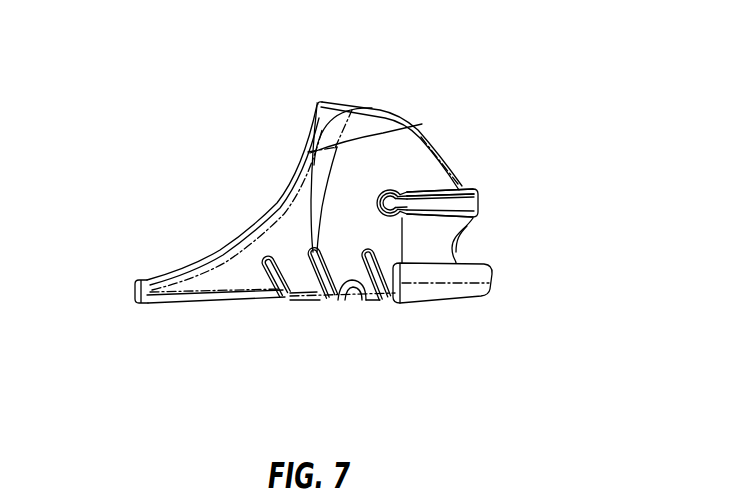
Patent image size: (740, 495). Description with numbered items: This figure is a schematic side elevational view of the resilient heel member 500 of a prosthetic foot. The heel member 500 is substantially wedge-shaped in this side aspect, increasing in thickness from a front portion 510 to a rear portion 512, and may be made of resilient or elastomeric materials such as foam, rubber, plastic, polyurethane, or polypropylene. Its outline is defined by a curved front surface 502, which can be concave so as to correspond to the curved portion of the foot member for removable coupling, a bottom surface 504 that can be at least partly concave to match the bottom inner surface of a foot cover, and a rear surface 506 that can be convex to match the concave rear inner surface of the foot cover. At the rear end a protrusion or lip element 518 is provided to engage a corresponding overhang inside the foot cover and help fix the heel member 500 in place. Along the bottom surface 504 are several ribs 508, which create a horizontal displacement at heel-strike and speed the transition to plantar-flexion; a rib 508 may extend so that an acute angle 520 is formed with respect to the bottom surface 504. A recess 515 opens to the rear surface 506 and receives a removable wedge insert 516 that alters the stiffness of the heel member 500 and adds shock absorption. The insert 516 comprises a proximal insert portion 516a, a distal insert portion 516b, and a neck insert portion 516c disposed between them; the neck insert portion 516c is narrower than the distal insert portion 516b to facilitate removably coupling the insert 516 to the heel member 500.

The heel member 500 is at (523, 89).
The front surface 502 is at (252, 216).
The bottom surface 504 is at (208, 303).
The rear surface 506 is at (437, 136).
The rib 508 is at (387, 296).
The front portion 510 is at (130, 292).
The rear portion 512 is at (483, 238).
The recess 515 is at (467, 186).
The removable wedge insert 516 is at (474, 199).
The proximal insert portion 516a is at (484, 223).
The distal insert portion 516b is at (398, 230).
The neck insert portion 516c is at (408, 188).
The lip element 518 is at (478, 296).
The acute angle 520 is at (340, 300).